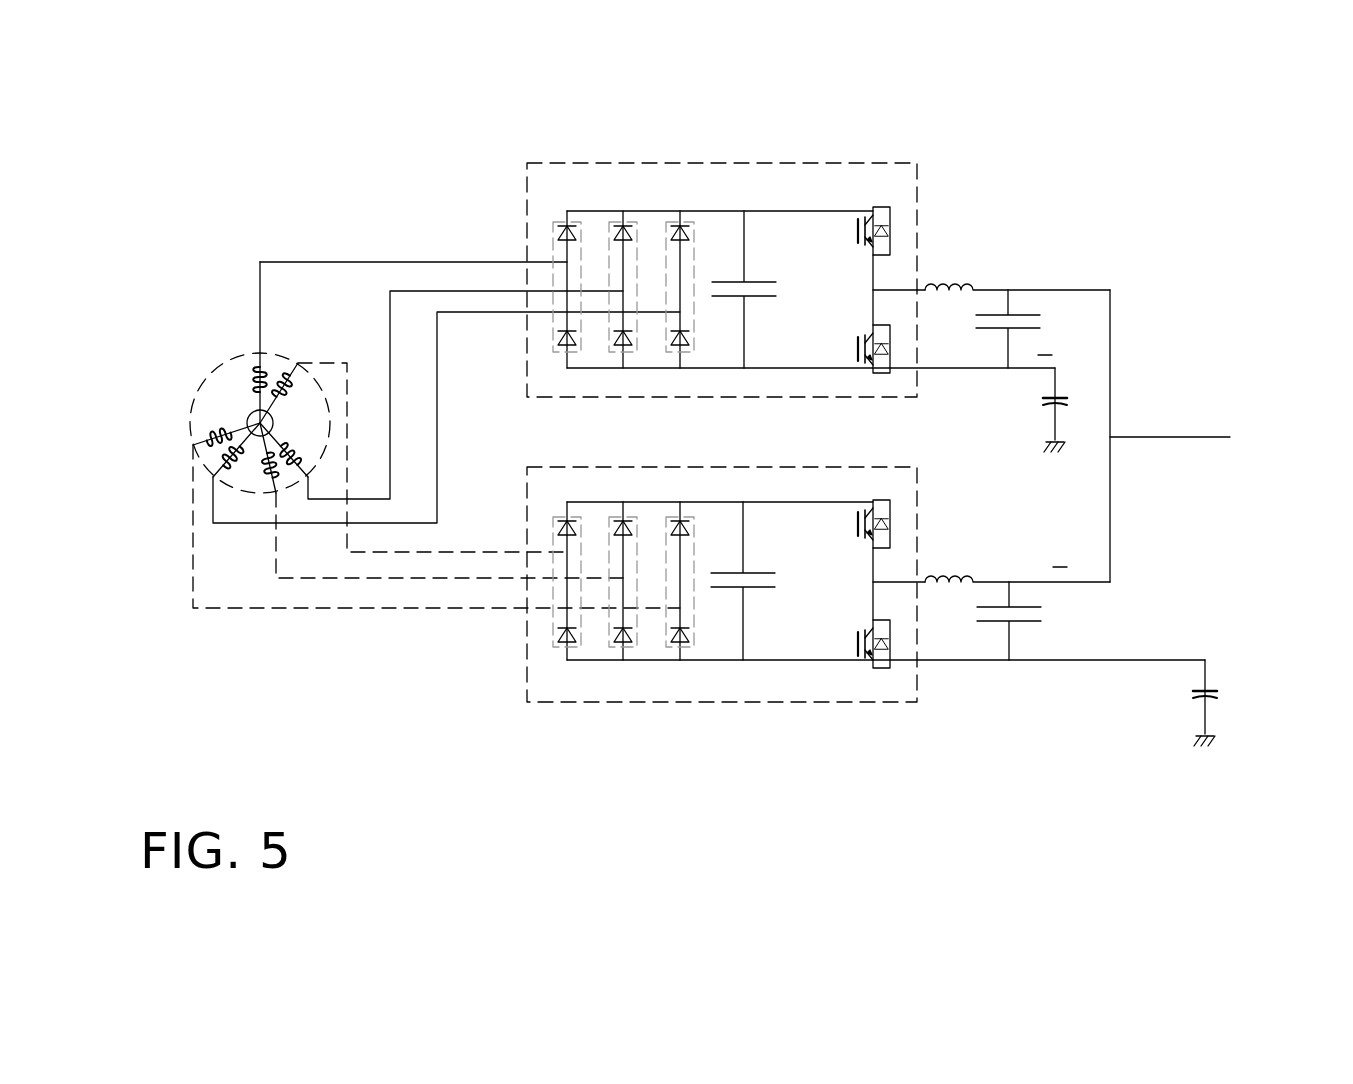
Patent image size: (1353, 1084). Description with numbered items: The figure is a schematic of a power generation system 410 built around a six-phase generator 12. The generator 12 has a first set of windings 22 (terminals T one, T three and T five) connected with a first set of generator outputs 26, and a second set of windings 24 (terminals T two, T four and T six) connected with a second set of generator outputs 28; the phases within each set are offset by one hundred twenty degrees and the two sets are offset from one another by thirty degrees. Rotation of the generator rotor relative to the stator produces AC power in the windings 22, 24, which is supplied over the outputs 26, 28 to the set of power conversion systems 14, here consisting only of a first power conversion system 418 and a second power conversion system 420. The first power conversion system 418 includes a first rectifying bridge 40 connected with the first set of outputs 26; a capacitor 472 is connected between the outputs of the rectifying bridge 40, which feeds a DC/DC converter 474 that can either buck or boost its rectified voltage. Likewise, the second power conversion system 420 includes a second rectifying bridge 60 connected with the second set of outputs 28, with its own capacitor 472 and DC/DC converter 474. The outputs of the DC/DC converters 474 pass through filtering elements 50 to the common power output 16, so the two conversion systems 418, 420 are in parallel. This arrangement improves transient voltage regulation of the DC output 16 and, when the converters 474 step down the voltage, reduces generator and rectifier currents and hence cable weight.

The power generation system 410 is at (228, 217).
The generator 12 is at (232, 362).
The first set of windings 22 is at (195, 388).
The second set of windings 24 is at (186, 420).
The first set of generator outputs 26 is at (498, 312).
The second set of generator outputs 28 is at (405, 552).
The power conversion systems 14 is at (930, 168).
The first rectifying bridge 40 is at (702, 314).
The second rectifying bridge 60 is at (706, 527).
The capacitor 472 is at (790, 306).
The DC/DC converter 474 is at (860, 246).
The first power conversion system 418 is at (920, 215).
The second power conversion system 420 is at (920, 487).
The filtering elements 50 is at (968, 275).
The power output 16 is at (1230, 425).